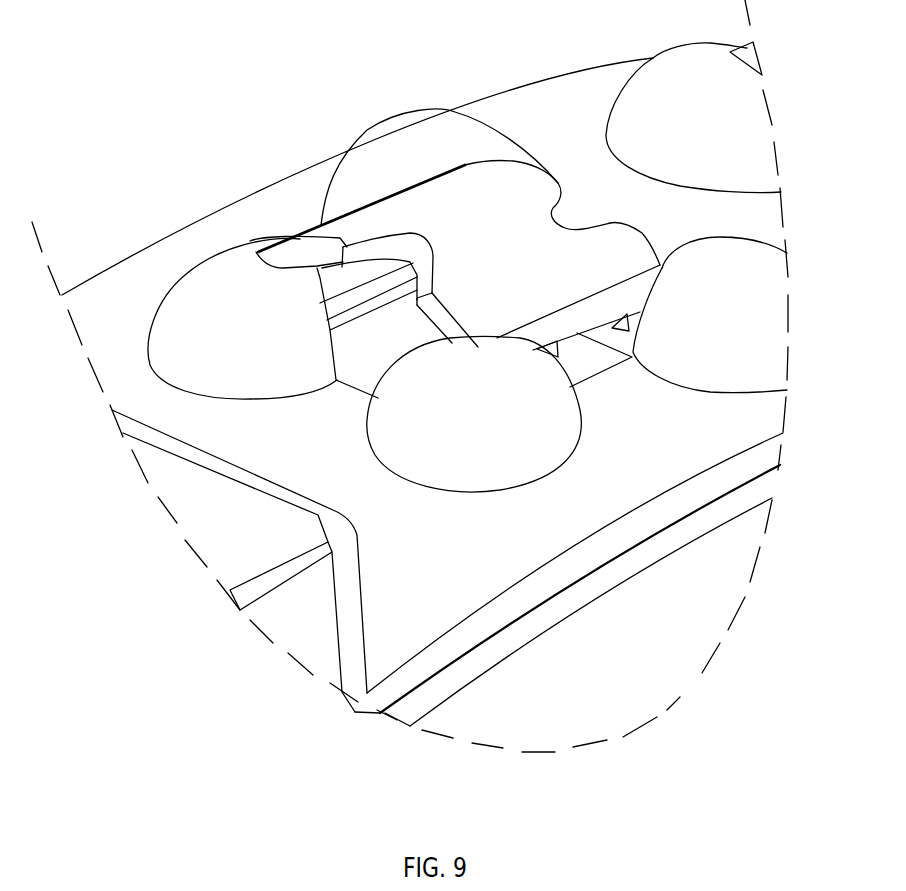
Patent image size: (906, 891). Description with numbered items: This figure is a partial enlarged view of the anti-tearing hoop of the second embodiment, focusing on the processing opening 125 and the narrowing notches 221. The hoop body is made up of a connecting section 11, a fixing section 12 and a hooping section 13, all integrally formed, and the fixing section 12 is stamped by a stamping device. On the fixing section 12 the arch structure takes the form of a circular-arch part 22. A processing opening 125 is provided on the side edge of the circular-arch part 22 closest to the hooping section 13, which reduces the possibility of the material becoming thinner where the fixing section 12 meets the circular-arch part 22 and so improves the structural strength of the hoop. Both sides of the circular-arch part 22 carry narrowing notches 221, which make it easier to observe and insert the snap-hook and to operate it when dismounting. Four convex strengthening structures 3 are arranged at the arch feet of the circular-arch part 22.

The convex strengthening structure 3 is at (538, 455).
The connecting section 11 is at (598, 588).
The fixing section 12 is at (513, 607).
The hooping section 13 is at (277, 553).
The circular-arch part 22 is at (423, 205).
The narrowing notch 221 is at (397, 247).
The processing opening 125 is at (312, 274).